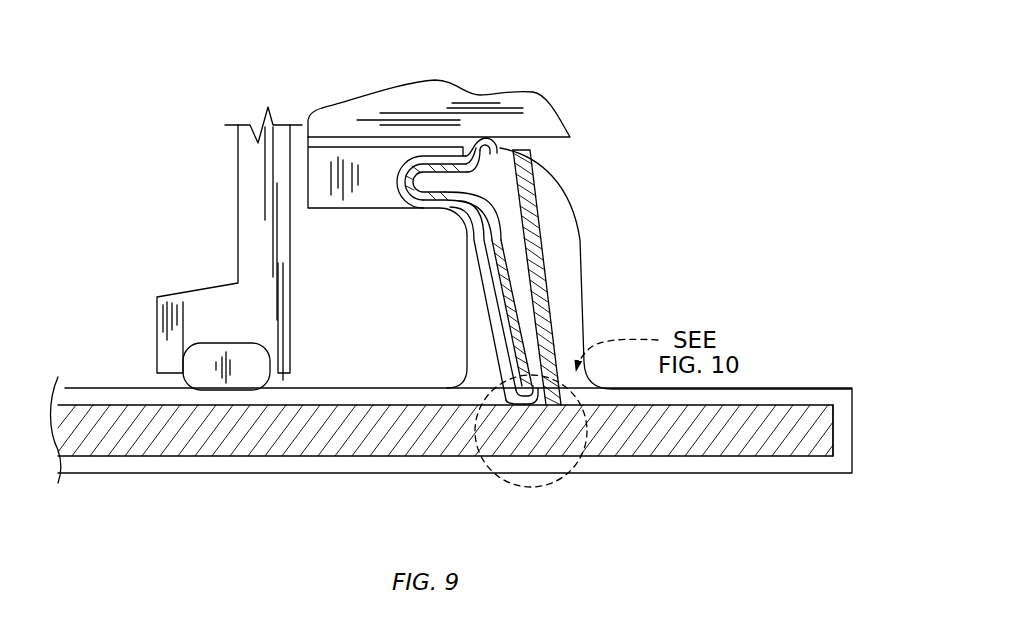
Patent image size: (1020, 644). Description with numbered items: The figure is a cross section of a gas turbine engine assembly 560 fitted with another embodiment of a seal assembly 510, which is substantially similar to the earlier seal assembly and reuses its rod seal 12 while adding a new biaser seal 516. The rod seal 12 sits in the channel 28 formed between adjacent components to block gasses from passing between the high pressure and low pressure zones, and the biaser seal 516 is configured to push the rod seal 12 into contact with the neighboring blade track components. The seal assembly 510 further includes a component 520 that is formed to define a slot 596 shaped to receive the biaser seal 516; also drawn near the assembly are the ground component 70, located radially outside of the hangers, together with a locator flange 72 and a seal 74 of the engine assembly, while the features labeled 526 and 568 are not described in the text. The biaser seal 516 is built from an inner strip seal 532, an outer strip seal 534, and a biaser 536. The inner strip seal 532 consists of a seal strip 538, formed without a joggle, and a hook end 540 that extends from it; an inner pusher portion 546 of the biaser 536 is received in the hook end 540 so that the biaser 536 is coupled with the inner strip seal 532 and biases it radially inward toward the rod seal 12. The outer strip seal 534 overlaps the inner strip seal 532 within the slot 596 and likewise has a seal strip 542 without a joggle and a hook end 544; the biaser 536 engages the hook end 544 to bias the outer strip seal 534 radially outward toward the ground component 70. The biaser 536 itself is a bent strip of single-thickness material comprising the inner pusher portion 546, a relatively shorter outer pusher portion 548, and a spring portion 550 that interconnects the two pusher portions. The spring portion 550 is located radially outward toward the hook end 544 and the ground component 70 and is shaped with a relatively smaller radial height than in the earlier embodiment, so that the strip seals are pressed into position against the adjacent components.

The rod seal 12 is at (80, 401).
The channel 28 is at (133, 392).
The ground component 70 is at (506, 109).
The locator flange 72 is at (235, 170).
The seal 74 is at (201, 342).
The seal assembly 510 is at (672, 82).
The biaser seal 516 is at (412, 268).
The component 520 is at (773, 384).
The seal base 526 is at (321, 213).
The inner strip seal 532 is at (511, 342).
The outer strip seal 534 is at (529, 214).
The biaser 536 is at (392, 172).
The seal strip 538 is at (502, 313).
The hook end 540 is at (548, 404).
The seal strip 542 is at (533, 250).
The hook end 544 is at (481, 134).
The inner pusher portion 546 is at (485, 283).
The outer pusher portion 548 is at (445, 167).
The spring portion 550 is at (432, 205).
The gas turbine engine assembly 560 is at (135, 77).
The cover end 568 is at (822, 397).
The slot 596 is at (524, 148).